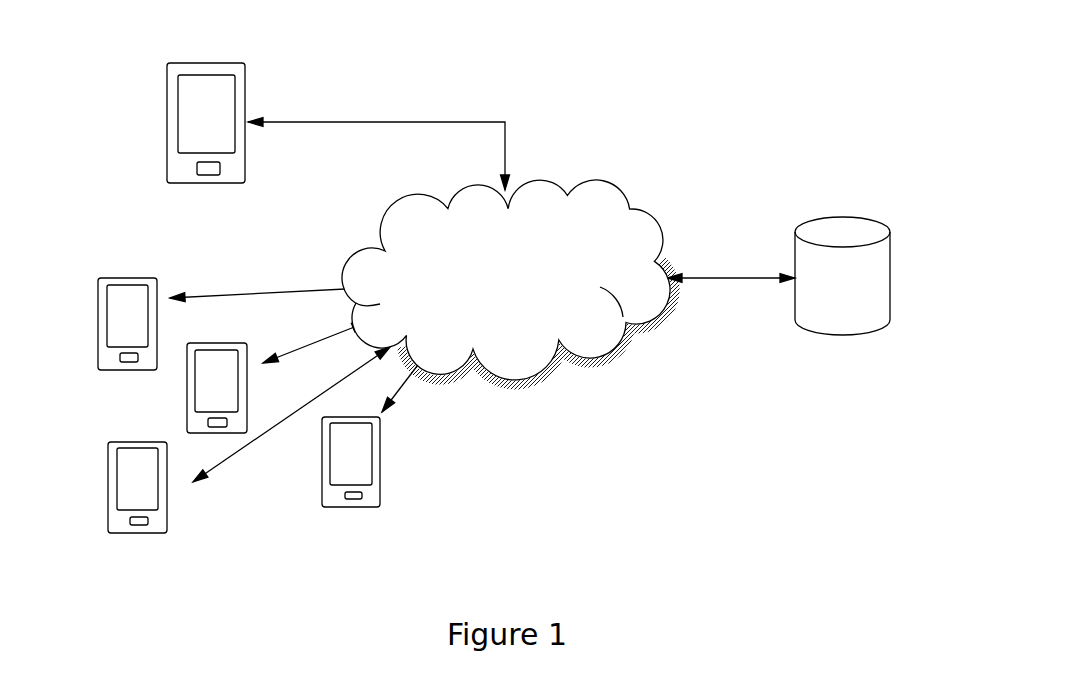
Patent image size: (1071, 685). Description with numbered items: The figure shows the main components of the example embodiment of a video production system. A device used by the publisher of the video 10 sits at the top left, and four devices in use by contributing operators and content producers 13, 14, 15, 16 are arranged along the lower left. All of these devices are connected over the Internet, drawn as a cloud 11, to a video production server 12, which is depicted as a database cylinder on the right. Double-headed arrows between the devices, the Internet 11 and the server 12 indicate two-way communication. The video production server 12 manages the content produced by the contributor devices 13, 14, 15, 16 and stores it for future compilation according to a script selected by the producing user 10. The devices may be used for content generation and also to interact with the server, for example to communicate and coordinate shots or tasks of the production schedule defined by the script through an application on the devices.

The publisher device 10 is at (195, 62).
The network cloud 11 is at (587, 180).
The video production server 12 is at (888, 247).
The contributing operator device 13 is at (122, 278).
The contributing operator device 14 is at (185, 397).
The contributing operator device 15 is at (103, 505).
The contributing operator device 16 is at (378, 468).